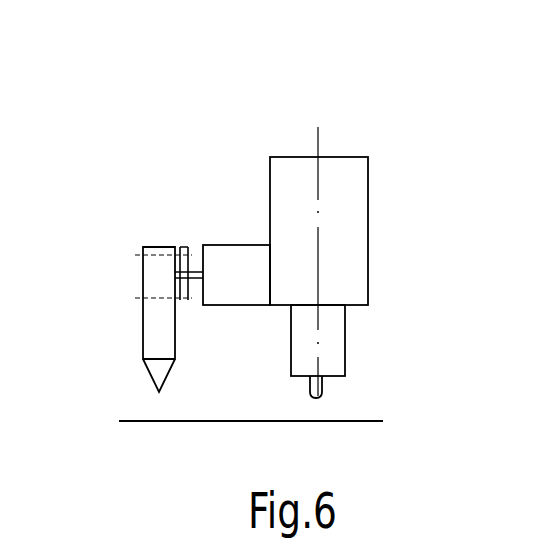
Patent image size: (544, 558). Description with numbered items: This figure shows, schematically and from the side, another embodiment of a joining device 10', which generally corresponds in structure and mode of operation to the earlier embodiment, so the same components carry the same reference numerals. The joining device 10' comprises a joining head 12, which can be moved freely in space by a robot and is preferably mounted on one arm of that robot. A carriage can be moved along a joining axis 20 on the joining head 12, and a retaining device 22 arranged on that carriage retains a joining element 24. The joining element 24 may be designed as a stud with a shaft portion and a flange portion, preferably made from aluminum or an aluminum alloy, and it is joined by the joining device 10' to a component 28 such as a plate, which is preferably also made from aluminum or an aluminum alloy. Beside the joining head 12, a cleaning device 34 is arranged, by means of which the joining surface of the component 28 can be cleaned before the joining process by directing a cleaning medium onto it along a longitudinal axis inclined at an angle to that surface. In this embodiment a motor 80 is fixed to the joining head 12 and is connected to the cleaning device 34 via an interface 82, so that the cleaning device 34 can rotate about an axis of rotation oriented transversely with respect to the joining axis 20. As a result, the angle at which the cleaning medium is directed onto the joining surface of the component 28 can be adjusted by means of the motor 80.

The joining device 10' is at (451, 71).
The joining head 12 is at (335, 206).
The joining axis 20 is at (318, 243).
The retaining device 22 is at (331, 350).
The joining element 24 is at (325, 389).
The component 28 is at (205, 421).
The cleaning device 34 is at (158, 292).
The motor 80 is at (252, 261).
The interface 82 is at (183, 246).